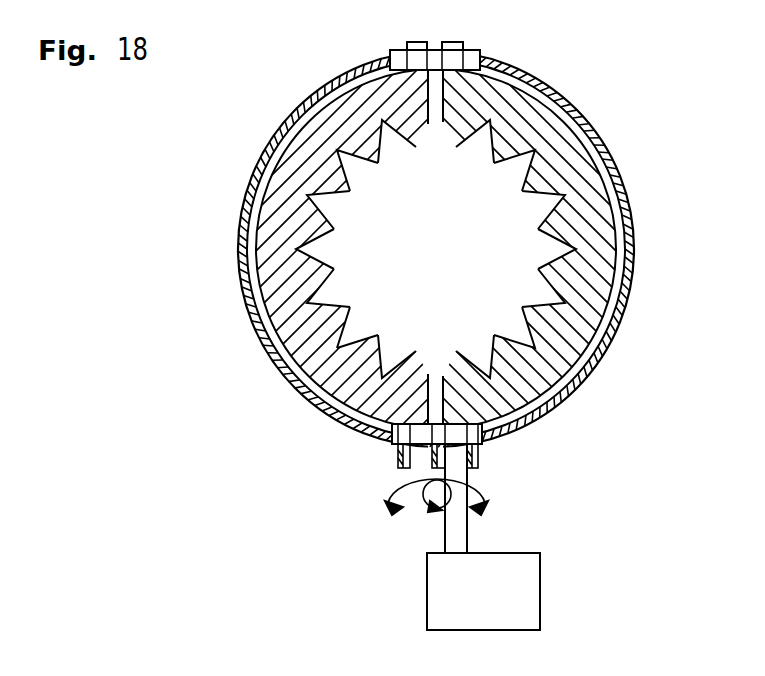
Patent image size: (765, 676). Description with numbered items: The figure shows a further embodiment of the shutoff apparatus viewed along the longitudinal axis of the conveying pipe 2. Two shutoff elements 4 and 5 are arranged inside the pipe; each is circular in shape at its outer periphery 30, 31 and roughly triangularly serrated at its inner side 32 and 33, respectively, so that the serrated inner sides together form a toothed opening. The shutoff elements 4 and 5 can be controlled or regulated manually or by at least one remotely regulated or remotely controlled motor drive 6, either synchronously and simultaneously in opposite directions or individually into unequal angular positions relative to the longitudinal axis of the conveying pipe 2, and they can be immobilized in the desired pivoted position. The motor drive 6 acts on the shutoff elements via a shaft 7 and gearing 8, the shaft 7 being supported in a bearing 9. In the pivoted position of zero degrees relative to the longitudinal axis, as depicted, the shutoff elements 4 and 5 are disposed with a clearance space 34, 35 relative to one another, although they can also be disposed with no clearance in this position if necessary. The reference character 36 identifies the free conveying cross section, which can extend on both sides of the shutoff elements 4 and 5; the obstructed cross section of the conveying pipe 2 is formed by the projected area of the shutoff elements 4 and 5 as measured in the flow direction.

The conveying pipe 2 is at (277, 363).
The shutoff element 4 is at (277, 307).
The shutoff element 5 is at (602, 271).
The motor drive 6 is at (437, 592).
The shaft 7 is at (458, 535).
The gearing 8 is at (398, 460).
The bearing 9 is at (470, 432).
The outer periphery 30 is at (267, 150).
The outer periphery 31 is at (603, 316).
The inner side 32 is at (380, 327).
The inner side 33 is at (492, 333).
The clearance space 34 is at (437, 98).
The clearance space 35 is at (435, 399).
The free conveying cross section 36 is at (513, 255).